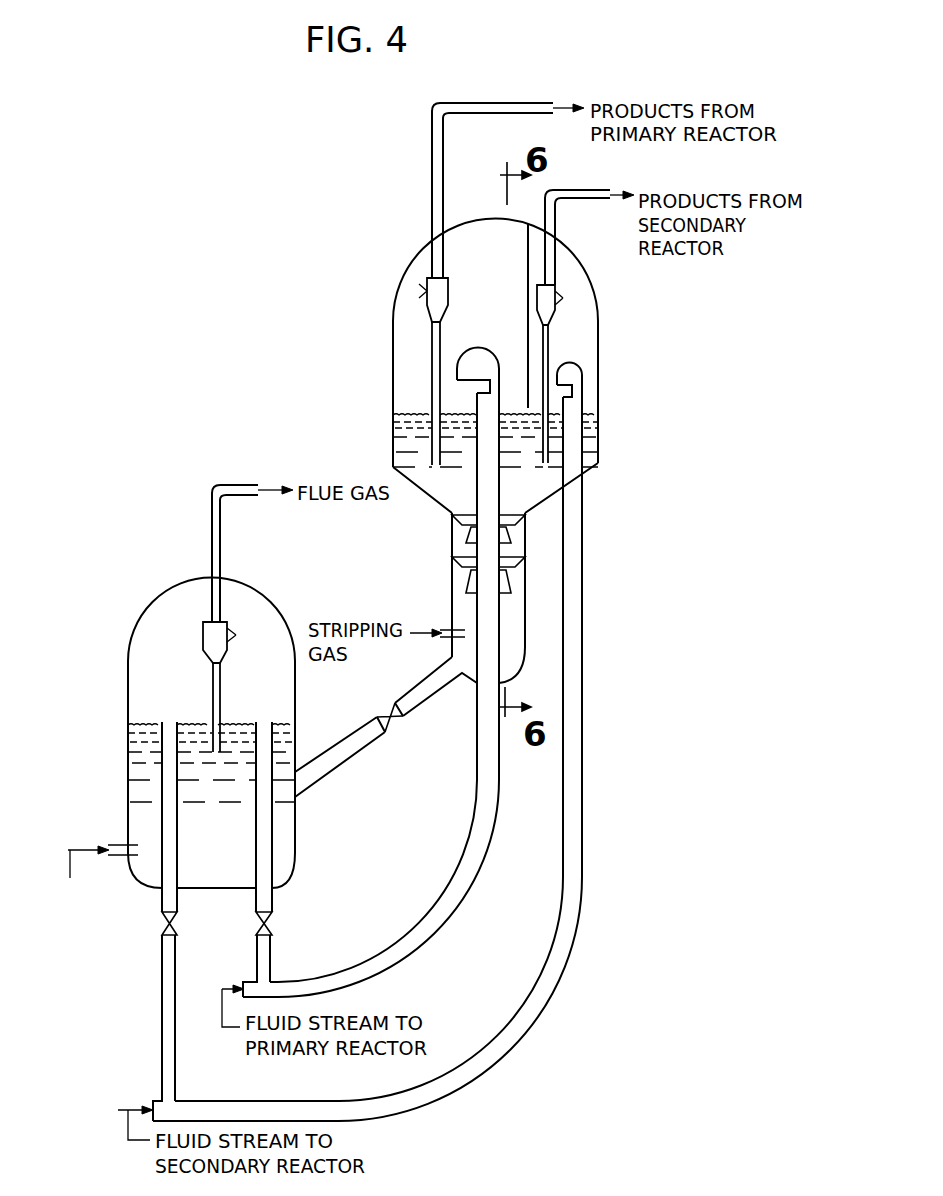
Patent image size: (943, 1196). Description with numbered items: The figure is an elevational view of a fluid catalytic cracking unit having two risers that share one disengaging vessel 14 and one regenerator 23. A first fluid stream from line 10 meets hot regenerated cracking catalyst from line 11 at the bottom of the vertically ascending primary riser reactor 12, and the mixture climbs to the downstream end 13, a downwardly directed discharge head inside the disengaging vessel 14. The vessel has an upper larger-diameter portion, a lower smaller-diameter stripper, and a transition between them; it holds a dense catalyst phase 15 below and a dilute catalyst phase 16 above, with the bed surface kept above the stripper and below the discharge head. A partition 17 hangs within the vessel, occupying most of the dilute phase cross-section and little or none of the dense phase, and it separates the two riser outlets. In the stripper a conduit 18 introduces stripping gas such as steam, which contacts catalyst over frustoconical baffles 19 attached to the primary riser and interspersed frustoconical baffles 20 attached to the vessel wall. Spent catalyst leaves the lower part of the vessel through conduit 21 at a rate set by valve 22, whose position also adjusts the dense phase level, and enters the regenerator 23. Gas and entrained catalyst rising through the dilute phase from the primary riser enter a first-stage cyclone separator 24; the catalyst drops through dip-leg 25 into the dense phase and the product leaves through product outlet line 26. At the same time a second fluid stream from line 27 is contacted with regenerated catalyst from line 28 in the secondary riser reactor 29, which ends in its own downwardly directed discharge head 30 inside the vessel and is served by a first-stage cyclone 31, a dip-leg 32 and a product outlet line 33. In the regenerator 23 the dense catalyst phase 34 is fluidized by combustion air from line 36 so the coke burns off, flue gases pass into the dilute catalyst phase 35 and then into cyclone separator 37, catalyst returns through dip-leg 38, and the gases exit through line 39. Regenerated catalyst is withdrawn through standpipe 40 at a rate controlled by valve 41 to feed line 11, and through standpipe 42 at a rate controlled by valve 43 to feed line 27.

The line 10 is at (222, 1009).
The line 11 is at (257, 951).
The primary riser reactor 12 is at (450, 914).
The downstream end 13 is at (476, 346).
The disengaging vessel 14 is at (598, 307).
The dense catalyst phase 15 is at (454, 498).
The dilute catalyst phase 16 is at (512, 344).
The partition 17 is at (528, 278).
The conduit 18 is at (452, 630).
The frustoconical baffles 19 is at (470, 575).
The frustoconical baffles 20 is at (452, 561).
The conduit 21 is at (409, 712).
The valve 22 is at (393, 727).
The regenerator 23 is at (295, 826).
The first-stage cyclone separator 24 is at (448, 295).
The dip-leg 25 is at (432, 378).
The product outlet line 26 is at (432, 172).
The line 27 is at (126, 1137).
The line 28 is at (162, 1027).
The secondary riser reactor 29 is at (571, 960).
The discharge head 30 is at (562, 370).
The first-stage cyclone 31 is at (560, 290).
The dip-leg 32 is at (538, 452).
The product outlet line 33 is at (604, 200).
The dense catalyst phase 34 is at (221, 830).
The dilute catalyst phase 35 is at (262, 682).
The line 36 is at (120, 844).
The cyclone separator 37 is at (203, 635).
The dip-leg 38 is at (212, 702).
The line 39 is at (221, 523).
The standpipe 40 is at (272, 908).
The valve 41 is at (272, 926).
The standpipe 42 is at (162, 899).
The valve 43 is at (162, 926).